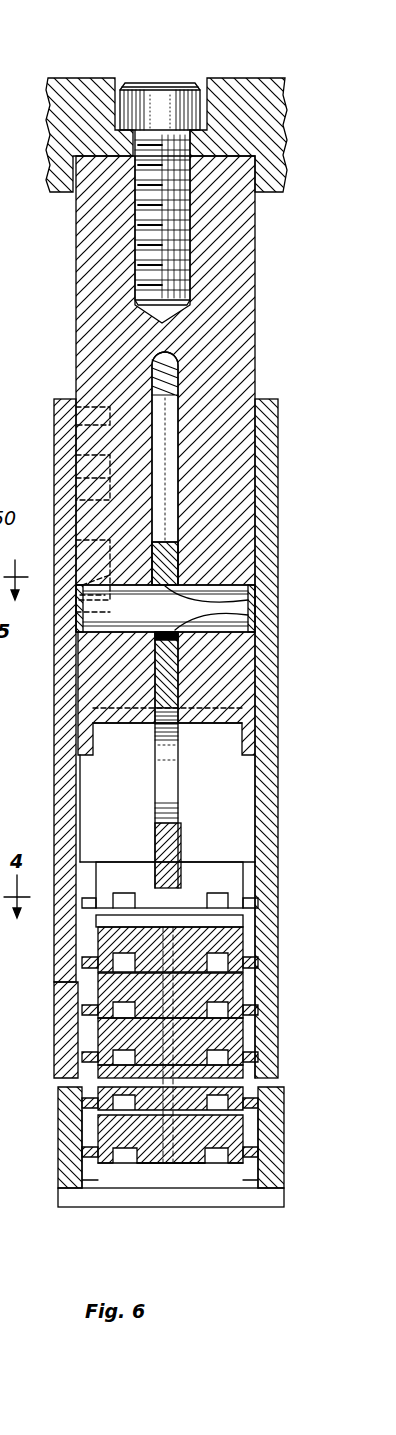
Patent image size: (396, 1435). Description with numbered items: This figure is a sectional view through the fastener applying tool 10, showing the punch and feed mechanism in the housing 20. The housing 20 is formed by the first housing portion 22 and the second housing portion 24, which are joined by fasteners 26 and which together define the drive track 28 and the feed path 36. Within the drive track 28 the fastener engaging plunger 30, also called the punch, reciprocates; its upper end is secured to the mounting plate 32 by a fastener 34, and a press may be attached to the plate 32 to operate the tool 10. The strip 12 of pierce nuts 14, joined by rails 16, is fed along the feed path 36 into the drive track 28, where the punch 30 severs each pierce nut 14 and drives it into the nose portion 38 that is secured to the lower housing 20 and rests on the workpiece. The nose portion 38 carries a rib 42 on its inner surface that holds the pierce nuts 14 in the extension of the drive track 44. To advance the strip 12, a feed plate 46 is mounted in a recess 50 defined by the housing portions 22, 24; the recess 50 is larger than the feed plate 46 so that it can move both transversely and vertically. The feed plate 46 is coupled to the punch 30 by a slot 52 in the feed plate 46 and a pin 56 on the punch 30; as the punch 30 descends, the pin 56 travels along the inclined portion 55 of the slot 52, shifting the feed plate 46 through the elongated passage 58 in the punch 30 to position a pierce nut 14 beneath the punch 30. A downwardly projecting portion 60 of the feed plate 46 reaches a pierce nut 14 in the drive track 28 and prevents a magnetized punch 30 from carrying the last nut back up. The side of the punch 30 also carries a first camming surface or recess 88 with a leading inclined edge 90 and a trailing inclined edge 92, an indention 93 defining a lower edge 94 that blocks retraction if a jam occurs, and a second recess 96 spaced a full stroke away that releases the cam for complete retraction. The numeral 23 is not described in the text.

The tool 10 is at (292, 284).
The strip of pierce nuts 12 is at (112, 862).
The pierce nut 14 is at (218, 868).
The rail 16 is at (258, 904).
The housing 20 is at (278, 521).
The first housing portion 22 is at (278, 400).
The member 23 is at (9, 243).
The second housing portion 24 is at (55, 400).
The fastener 26 is at (39, 916).
The drive track 28 is at (220, 756).
The plunger 30 is at (76, 280).
The mounting plate 32 is at (77, 80).
The fastener 34 is at (170, 95).
The feed path 36 is at (258, 881).
The nose portion 38 is at (58, 1168).
The rib 42 is at (165, 1148).
The extension of the drive track 44 is at (192, 1165).
The feed plate 46 is at (185, 862).
The recess 50 is at (160, 748).
The slot 52 is at (248, 625).
The inclined portion 55 is at (235, 616).
The pin 56 is at (228, 598).
The elongated passage 58 is at (168, 453).
The downwardly projecting portion 60 is at (180, 880).
The first camming surface 88 is at (76, 586).
The leading inclined edge 90 is at (78, 610).
The trailing inclined edge 92 is at (76, 560).
The indention 93 is at (76, 462).
The lower edge 94 is at (80, 490).
The second recess 96 is at (76, 430).